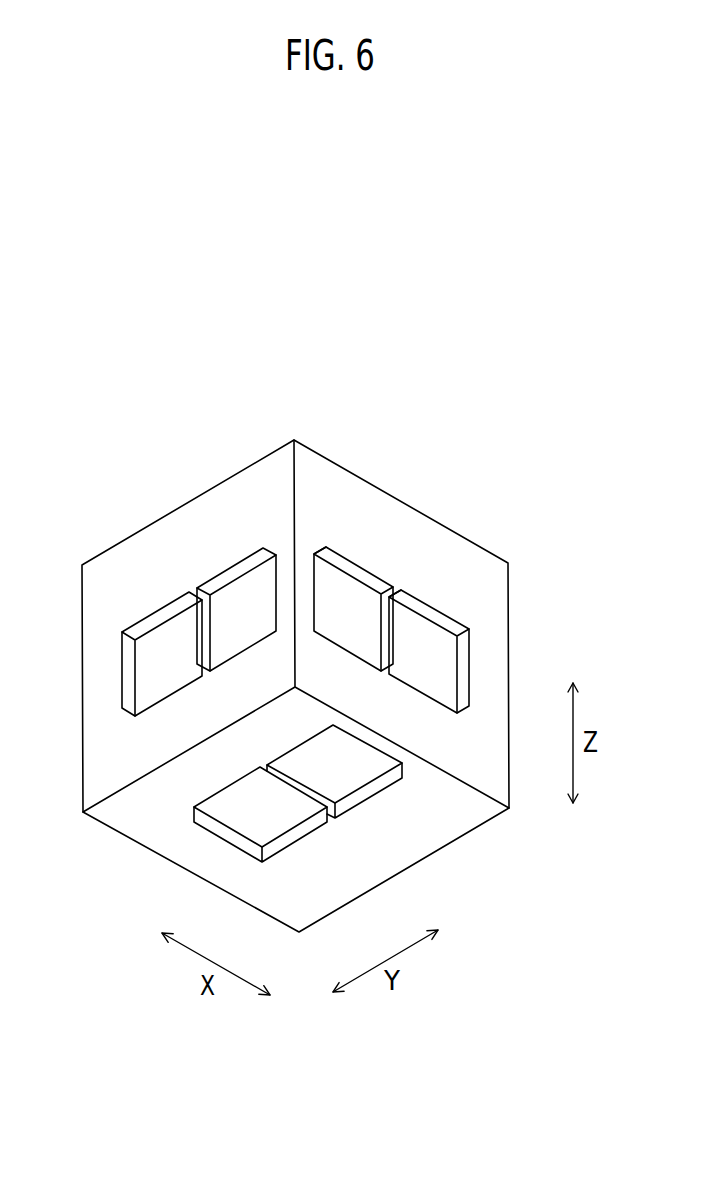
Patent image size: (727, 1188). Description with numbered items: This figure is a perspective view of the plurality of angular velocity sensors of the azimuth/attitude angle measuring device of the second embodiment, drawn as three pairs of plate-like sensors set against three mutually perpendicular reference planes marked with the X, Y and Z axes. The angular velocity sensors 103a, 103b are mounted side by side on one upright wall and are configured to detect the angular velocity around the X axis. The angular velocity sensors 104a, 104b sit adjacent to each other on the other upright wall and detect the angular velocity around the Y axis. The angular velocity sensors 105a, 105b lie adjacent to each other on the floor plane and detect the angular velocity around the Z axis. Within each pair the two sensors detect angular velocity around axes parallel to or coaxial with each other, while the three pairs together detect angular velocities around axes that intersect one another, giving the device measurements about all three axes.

The angular velocity sensor 103a is at (245, 567).
The angular velocity sensor 103b is at (160, 620).
The angular velocity sensor 104a is at (356, 567).
The angular velocity sensor 104b is at (432, 612).
The angular velocity sensor 105a is at (382, 782).
The angular velocity sensor 105b is at (208, 823).